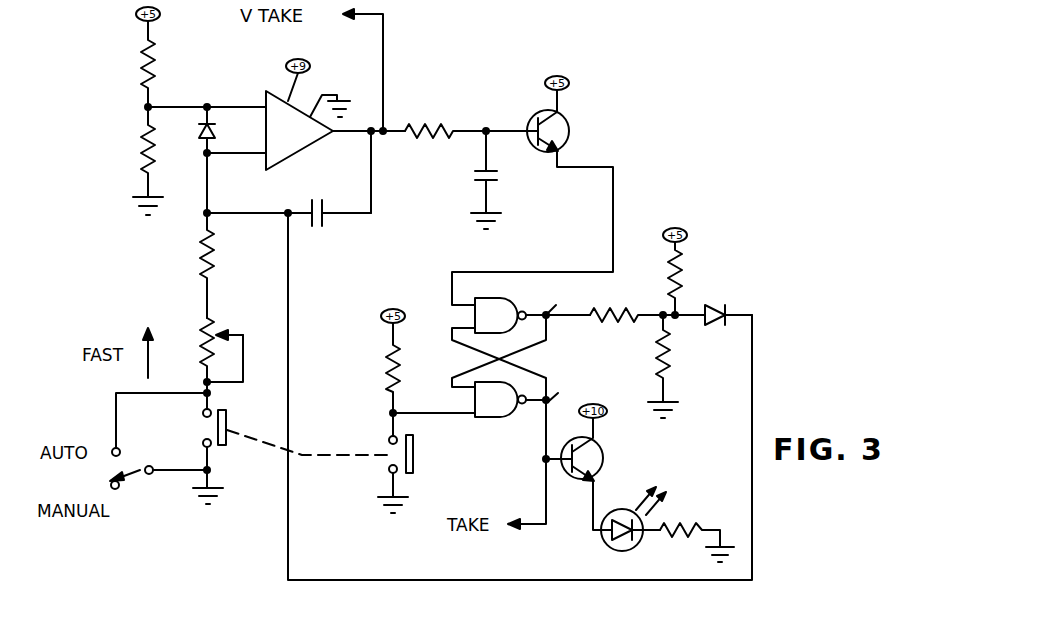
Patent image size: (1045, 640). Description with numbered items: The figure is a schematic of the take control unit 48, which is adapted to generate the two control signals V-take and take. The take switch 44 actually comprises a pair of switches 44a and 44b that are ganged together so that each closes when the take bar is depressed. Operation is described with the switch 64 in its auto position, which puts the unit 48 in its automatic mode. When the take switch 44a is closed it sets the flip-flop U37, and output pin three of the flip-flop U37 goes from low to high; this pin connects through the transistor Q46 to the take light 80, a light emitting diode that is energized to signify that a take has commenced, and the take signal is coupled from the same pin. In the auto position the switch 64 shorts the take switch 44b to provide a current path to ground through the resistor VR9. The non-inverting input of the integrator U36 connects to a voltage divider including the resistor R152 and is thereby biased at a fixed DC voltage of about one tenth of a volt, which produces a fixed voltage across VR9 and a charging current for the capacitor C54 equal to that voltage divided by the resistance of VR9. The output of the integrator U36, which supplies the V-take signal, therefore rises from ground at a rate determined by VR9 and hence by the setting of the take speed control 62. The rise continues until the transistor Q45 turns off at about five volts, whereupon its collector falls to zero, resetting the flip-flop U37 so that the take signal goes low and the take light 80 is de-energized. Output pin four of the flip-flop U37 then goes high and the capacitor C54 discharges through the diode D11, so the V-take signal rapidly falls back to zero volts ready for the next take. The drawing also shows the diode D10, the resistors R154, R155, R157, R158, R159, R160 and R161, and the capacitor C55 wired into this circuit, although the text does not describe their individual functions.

The voltage dividing resistor R152 is at (140, 54).
The diode D10 is at (214, 128).
The integrator U36 is at (310, 127).
The capacitor C54 is at (325, 218).
The resistor R154 is at (200, 265).
The resistor VR9 is at (212, 327).
The take speed control 62 is at (200, 347).
The take switch 44b is at (226, 433).
The switch 64 is at (135, 474).
The take switch 44 is at (340, 459).
The resistor R157 is at (386, 369).
The take switch 44a is at (413, 462).
The resistor R155 is at (435, 123).
The capacitor C55 is at (473, 173).
The transistor Q45 is at (565, 114).
The flip-flop U37 is at (512, 360).
The resistor R158 is at (632, 299).
The resistor R159 is at (681, 279).
The resistor R160 is at (674, 358).
The diode D11 is at (728, 307).
The transistor Q46 is at (604, 448).
The take light 80 is at (605, 549).
The resistor R161 is at (682, 541).
The take control unit 48 is at (740, 129).